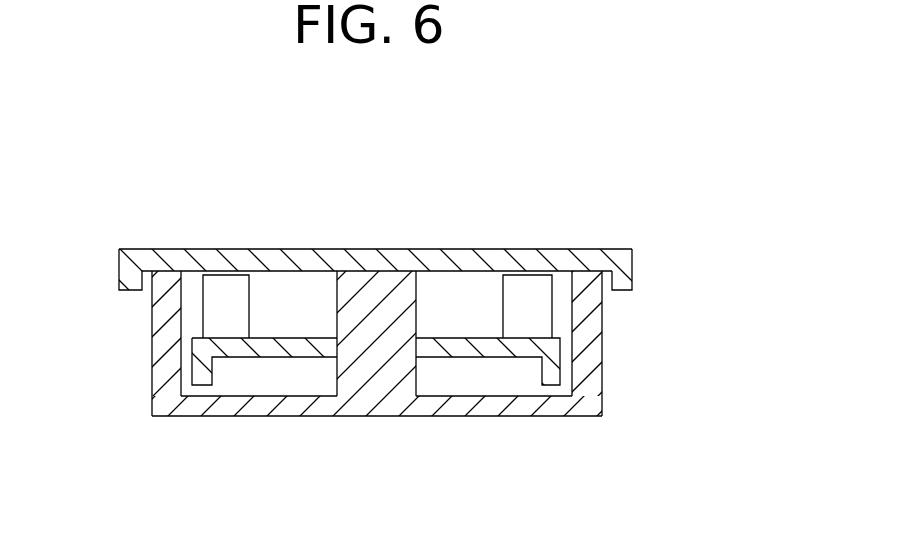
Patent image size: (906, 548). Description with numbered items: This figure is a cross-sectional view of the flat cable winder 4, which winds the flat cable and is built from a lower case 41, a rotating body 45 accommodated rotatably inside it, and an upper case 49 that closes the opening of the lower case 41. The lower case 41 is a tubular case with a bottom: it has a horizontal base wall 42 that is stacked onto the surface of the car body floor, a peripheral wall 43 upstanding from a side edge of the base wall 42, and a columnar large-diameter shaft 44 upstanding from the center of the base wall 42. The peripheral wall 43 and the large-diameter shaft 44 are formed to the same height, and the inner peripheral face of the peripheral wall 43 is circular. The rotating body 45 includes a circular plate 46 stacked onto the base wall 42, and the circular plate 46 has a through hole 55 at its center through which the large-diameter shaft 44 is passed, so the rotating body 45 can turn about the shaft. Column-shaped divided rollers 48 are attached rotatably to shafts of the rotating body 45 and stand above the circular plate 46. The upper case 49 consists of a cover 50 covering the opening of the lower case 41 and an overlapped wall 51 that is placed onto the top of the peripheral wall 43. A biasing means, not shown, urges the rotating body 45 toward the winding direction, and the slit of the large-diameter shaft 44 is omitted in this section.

The flat cable winder 4 is at (683, 258).
The lower case 41 is at (660, 388).
The base wall 42 is at (495, 407).
The peripheral wall 43 is at (592, 390).
The large-diameter shaft 44 is at (388, 373).
The rotating body 45 is at (560, 340).
The circular plate 46 is at (262, 348).
The divided roller 48 is at (232, 290).
The upper case 49 is at (672, 183).
The cover 50 is at (532, 262).
The overlapped wall 51 is at (630, 278).
The through hole 55 is at (337, 334).